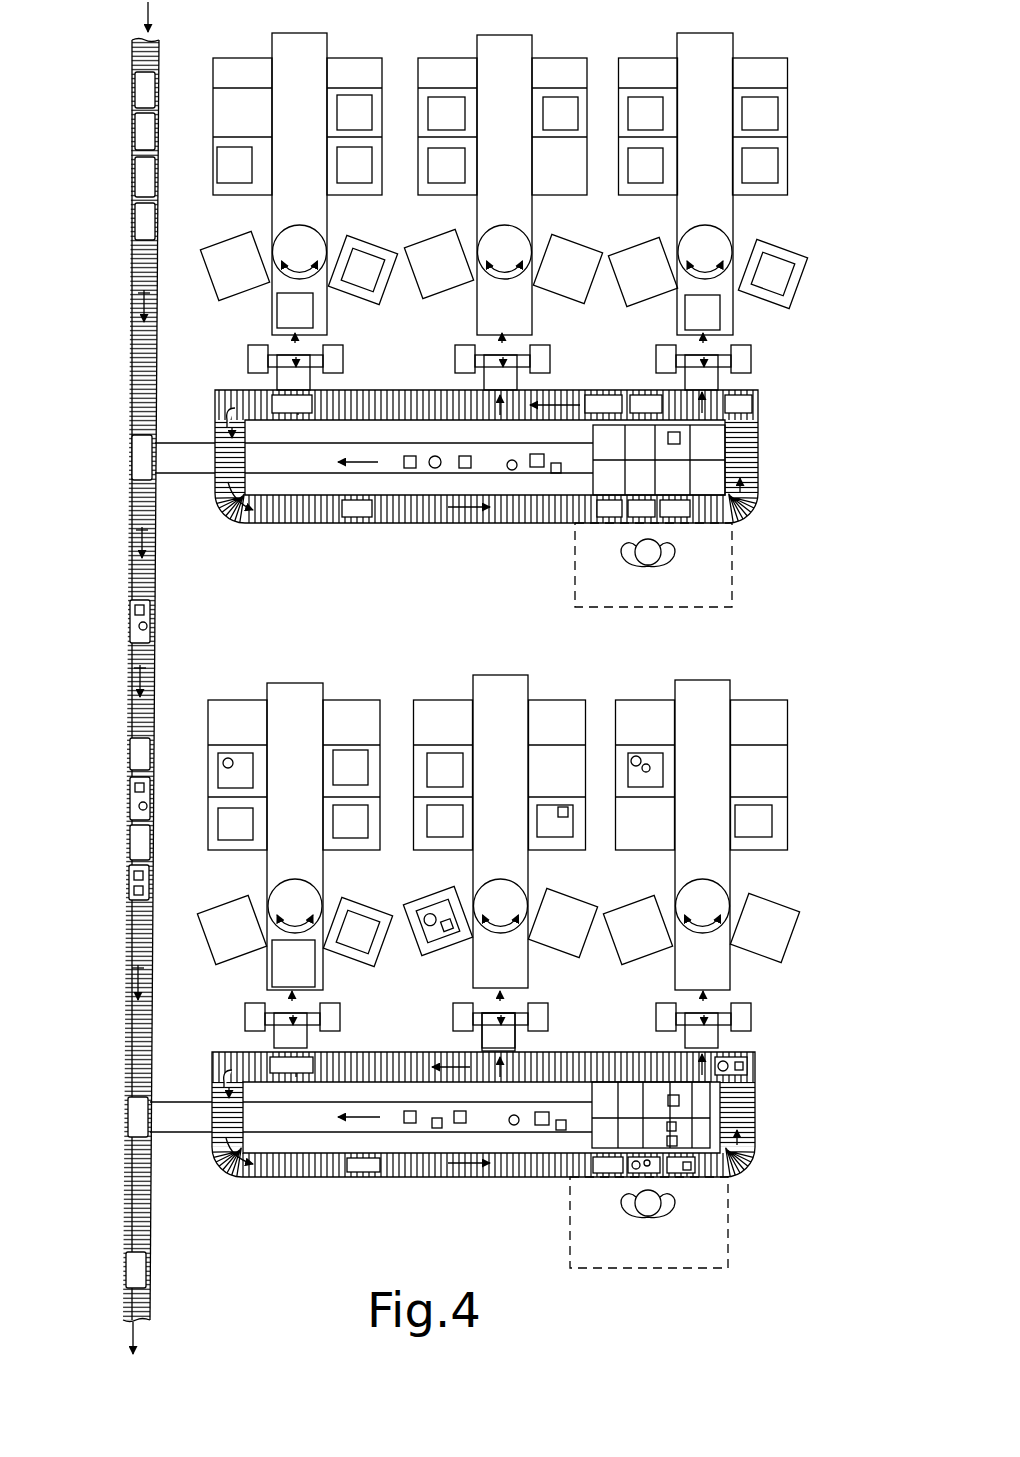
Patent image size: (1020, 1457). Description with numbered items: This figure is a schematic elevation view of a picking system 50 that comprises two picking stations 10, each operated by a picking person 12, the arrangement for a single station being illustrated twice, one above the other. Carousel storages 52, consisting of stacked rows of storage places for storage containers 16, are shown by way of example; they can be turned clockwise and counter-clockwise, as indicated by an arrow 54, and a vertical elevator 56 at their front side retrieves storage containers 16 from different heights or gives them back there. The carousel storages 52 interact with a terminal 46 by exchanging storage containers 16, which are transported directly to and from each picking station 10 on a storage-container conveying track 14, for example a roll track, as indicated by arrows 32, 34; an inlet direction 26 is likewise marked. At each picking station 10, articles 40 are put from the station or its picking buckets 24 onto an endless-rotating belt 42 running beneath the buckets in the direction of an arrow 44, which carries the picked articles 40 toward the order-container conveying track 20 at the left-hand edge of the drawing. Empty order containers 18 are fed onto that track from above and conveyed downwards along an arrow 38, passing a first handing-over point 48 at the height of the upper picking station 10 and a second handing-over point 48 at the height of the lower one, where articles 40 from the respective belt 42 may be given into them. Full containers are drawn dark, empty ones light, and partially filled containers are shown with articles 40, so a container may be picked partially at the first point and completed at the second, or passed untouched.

The picking station 10 is at (733, 560).
The picking person 12 is at (652, 555).
The storage-container conveying track 14 is at (393, 390).
The storage container 16 is at (239, 157).
The order container 18 is at (135, 90).
The order-container conveying track 20 is at (132, 318).
The picking bucket 24 is at (723, 475).
The inlet direction 26 is at (148, 12).
The arrow 32 is at (458, 525).
The arrow 34 is at (752, 500).
The arrow 38 is at (135, 1328).
The article 40 is at (438, 457).
The belt 42 is at (488, 449).
The arrow 44 is at (378, 460).
The terminal 46 is at (488, 1038).
The handing-over point 48 is at (118, 430).
The picking system 50 is at (75, 551).
The carousel storage 52 is at (244, 213).
The arrow 54 is at (308, 259).
The vertical elevator 56 is at (245, 353).